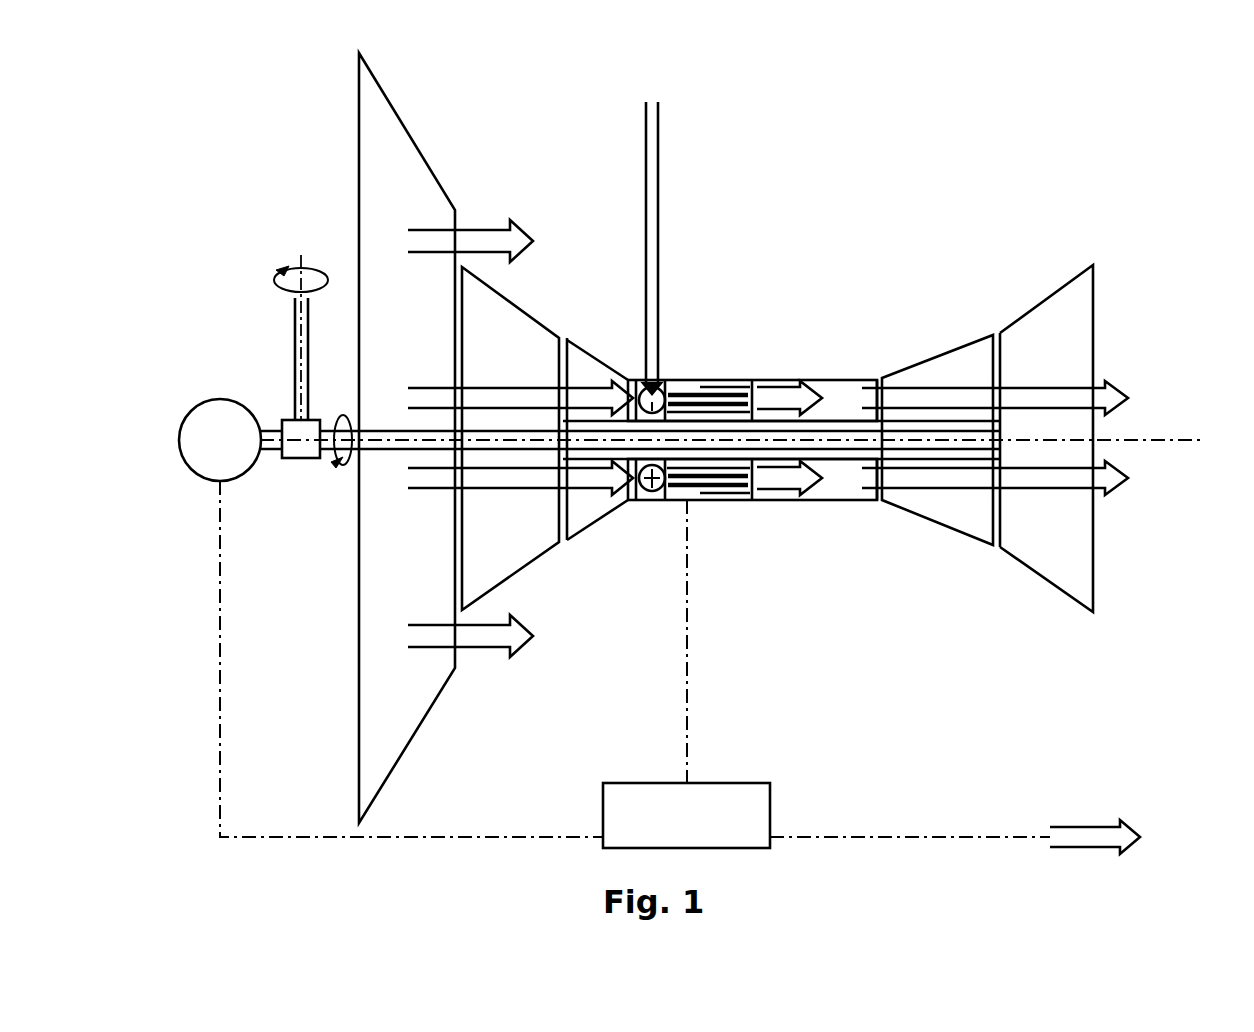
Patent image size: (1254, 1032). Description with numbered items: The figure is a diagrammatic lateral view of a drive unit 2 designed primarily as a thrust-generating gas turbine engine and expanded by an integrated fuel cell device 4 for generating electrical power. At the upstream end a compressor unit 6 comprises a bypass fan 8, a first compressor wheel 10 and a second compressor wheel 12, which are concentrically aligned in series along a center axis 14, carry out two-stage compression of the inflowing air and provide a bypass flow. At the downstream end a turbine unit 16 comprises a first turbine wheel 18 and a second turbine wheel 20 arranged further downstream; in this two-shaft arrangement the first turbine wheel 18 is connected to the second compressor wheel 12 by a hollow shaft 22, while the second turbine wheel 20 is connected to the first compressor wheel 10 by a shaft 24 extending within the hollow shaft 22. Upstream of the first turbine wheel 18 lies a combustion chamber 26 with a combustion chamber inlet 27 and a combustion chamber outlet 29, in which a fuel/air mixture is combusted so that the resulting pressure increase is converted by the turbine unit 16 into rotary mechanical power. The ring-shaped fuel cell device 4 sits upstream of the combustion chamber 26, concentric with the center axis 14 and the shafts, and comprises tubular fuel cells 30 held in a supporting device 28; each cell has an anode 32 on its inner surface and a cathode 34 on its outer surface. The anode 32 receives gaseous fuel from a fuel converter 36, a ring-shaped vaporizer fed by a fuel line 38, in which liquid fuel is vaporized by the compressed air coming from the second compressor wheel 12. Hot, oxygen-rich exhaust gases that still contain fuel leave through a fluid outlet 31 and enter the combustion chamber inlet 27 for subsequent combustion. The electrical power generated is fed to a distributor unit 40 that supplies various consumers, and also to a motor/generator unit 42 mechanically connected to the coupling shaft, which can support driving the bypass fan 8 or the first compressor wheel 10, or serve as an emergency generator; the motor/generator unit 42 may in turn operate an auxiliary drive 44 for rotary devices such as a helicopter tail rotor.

The drive unit 2 is at (772, 160).
The fuel cell device 4 is at (675, 356).
The compressor unit 6 is at (515, 193).
The bypass fan 8 is at (382, 131).
The first compressor wheel 10 is at (520, 337).
The second compressor wheel 12 is at (583, 377).
The center axis 14 is at (1165, 440).
The turbine unit 16 is at (975, 280).
The first turbine wheel 18 is at (945, 375).
The second turbine wheel 20 is at (1075, 320).
The hollow shaft 22 is at (905, 383).
The shaft 24 is at (915, 445).
The combustion chamber 26 is at (825, 506).
The combustion chamber inlet 27 is at (752, 504).
The supporting device 28 is at (665, 493).
The combustion chamber outlet 29 is at (878, 504).
The tubular fuel cells 30 is at (678, 494).
The fluid outlet 31 is at (745, 362).
The anode 32 is at (702, 493).
The cathode 34 is at (706, 470).
The fuel converter 36 is at (645, 497).
The fuel line 38 is at (658, 196).
The distributor unit 40 is at (740, 800).
The motor/generator unit 42 is at (200, 418).
The auxiliary drive 44 is at (295, 353).